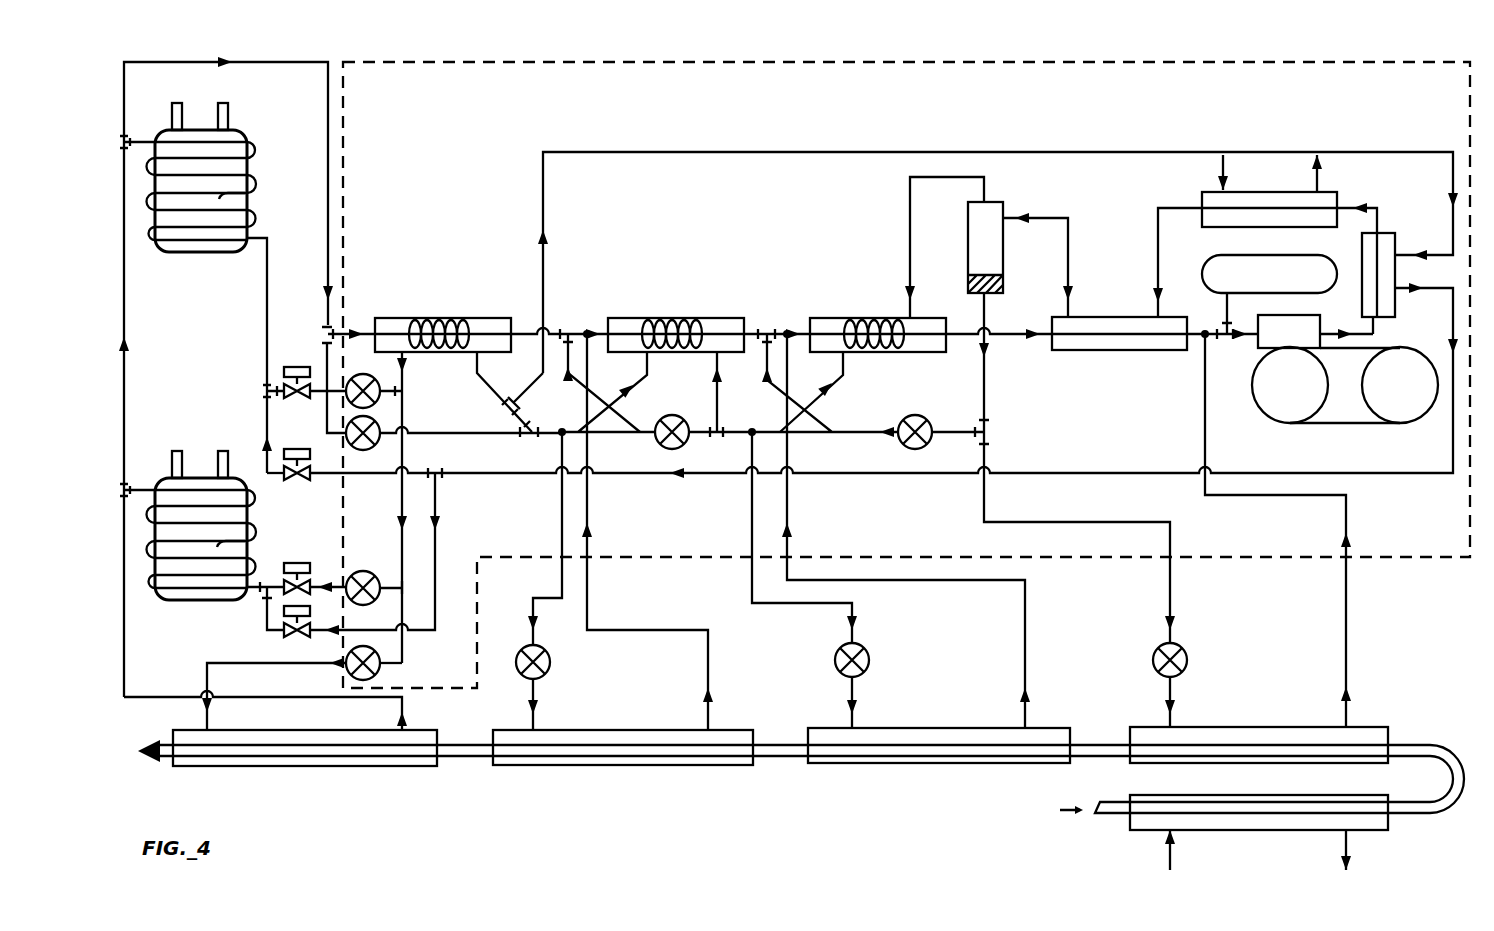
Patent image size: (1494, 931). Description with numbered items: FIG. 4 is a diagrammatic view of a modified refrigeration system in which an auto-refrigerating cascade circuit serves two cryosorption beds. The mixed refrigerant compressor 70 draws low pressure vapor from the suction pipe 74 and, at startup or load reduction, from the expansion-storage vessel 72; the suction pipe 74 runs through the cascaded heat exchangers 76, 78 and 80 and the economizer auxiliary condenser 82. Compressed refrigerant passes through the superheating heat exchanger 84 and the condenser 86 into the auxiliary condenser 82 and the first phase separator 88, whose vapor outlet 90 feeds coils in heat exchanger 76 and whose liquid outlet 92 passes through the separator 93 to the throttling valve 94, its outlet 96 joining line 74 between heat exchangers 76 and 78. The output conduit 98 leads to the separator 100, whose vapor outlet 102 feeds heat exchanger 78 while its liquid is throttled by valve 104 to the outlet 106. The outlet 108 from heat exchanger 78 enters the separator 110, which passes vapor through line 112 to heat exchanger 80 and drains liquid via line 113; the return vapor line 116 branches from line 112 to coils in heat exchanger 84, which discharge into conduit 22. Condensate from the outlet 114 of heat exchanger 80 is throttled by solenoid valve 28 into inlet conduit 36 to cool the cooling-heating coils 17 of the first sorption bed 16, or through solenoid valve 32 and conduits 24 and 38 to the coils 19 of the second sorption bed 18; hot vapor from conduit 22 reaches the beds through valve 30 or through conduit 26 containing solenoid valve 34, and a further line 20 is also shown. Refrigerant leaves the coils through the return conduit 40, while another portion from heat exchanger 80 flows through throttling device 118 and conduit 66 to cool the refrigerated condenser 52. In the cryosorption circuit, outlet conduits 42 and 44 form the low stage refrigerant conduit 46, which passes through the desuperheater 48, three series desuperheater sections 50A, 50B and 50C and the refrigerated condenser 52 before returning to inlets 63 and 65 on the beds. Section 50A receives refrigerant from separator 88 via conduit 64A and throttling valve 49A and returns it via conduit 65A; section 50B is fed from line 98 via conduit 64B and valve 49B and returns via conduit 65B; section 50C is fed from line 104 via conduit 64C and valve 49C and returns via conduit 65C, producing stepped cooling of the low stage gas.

The first sorption bed 16 is at (250, 150).
The cooling-heating coils 17 is at (252, 203).
The second sorption bed 18 is at (252, 517).
The cooling-heating coils 19 is at (250, 543).
The refrigerant supply line 20 is at (323, 352).
The conduit 22 is at (330, 478).
The conduit 24 is at (320, 574).
The conduit 26 is at (310, 638).
The solenoid valve 28 is at (283, 380).
The valve 30 is at (284, 449).
The solenoid valve 32 is at (294, 563).
The solenoid valve 34 is at (270, 622).
The inlet conduit 36 is at (267, 303).
The inlet conduit 38 is at (260, 594).
The return conduit 40 is at (152, 62).
The outlet conduit 42 is at (228, 118).
The outlet conduit 44 is at (240, 450).
The low stage refrigerant conduit 46 is at (1080, 763).
The water or air cooled desuperheater 48 is at (1237, 830).
The throttling valve 49A is at (1187, 656).
The throttling valve 49B is at (870, 656).
The throttling valve 49C is at (552, 658).
The desuperheater section 50A is at (1245, 763).
The desuperheater section 50B is at (895, 765).
The desuperheater section 50C is at (545, 767).
The refrigerated condenser 52 is at (291, 768).
The inlet 63 is at (177, 103).
The conduit 64A is at (984, 520).
The conduit 64B is at (752, 500).
The conduit 64C is at (560, 498).
The inlet 65 is at (191, 450).
The conduit 65A is at (1346, 497).
The conduit 65B is at (785, 500).
The conduit 65C is at (590, 496).
The second conduit 66 is at (207, 688).
The mixed refrigerant compressor 70 is at (1270, 422).
The expansion-storage vessel 72 is at (1235, 262).
The suction pipe 74 is at (530, 330).
The cascade heat exchanger 76 is at (813, 317).
The cascade heat exchanger 78 is at (653, 317).
The final cascade heat exchanger 80 is at (406, 318).
The economizer auxiliary condenser 82 is at (1139, 350).
The superheating heat exchanger 84 is at (1378, 233).
The condenser 86 is at (1253, 192).
The first phase separator 88 is at (991, 202).
The vapor outlet 90 is at (907, 210).
The liquid outlet 92 is at (982, 330).
The separator 93 is at (982, 424).
The throttling valve 94 is at (904, 414).
The outlet 96 is at (784, 402).
The output conduit 98 is at (795, 434).
The separator 100 is at (719, 440).
The vapor outlet 102 is at (683, 406).
The throttling valve 104 is at (655, 437).
The outlet 106 is at (584, 386).
The outlet 108 is at (516, 404).
The separator 110 is at (517, 437).
The vapor line 112 is at (480, 394).
The line 113 is at (454, 437).
The outlet conduit 114 is at (407, 356).
The return vapor line 116 is at (682, 148).
The throttling device 118 is at (382, 660).